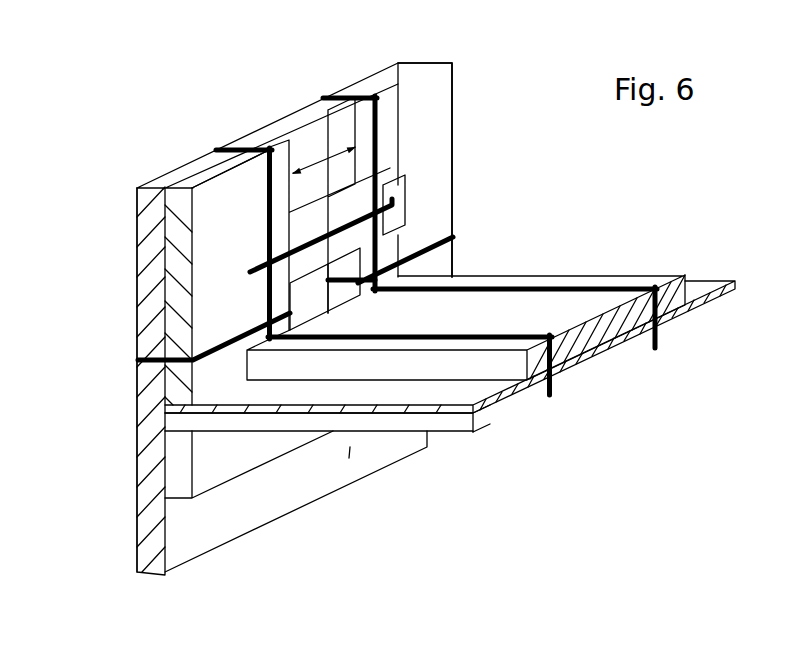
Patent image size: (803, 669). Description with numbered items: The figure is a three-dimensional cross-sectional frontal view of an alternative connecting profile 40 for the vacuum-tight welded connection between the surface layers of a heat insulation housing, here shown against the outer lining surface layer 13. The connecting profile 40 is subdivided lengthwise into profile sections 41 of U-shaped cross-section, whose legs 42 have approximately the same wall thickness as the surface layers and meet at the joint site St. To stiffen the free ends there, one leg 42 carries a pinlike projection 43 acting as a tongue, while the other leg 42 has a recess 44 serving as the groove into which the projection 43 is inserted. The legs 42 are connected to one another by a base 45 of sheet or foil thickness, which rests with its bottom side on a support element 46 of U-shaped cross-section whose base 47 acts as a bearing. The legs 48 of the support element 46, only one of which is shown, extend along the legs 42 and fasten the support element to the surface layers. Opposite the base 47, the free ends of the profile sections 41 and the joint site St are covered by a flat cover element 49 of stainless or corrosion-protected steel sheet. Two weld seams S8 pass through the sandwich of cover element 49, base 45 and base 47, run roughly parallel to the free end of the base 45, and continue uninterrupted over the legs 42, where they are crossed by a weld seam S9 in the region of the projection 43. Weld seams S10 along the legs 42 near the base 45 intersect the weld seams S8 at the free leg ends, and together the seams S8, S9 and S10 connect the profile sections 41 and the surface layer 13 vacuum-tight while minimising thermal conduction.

The surface layer 13 is at (156, 402).
The connecting profile 40 is at (432, 63).
The profile section 41 is at (458, 95).
The leg 42 is at (322, 170).
The pinlike projection 43 is at (310, 263).
The recess 44 is at (393, 192).
The base 45 is at (452, 413).
The support element 46 is at (349, 458).
The base 47 is at (403, 423).
The leg 48 is at (178, 478).
The cover element 49 is at (300, 365).
The weld seam S8 is at (218, 148).
The weld seam S9 is at (255, 274).
The weld seam S10 is at (452, 237).
The joint site St is at (324, 155).